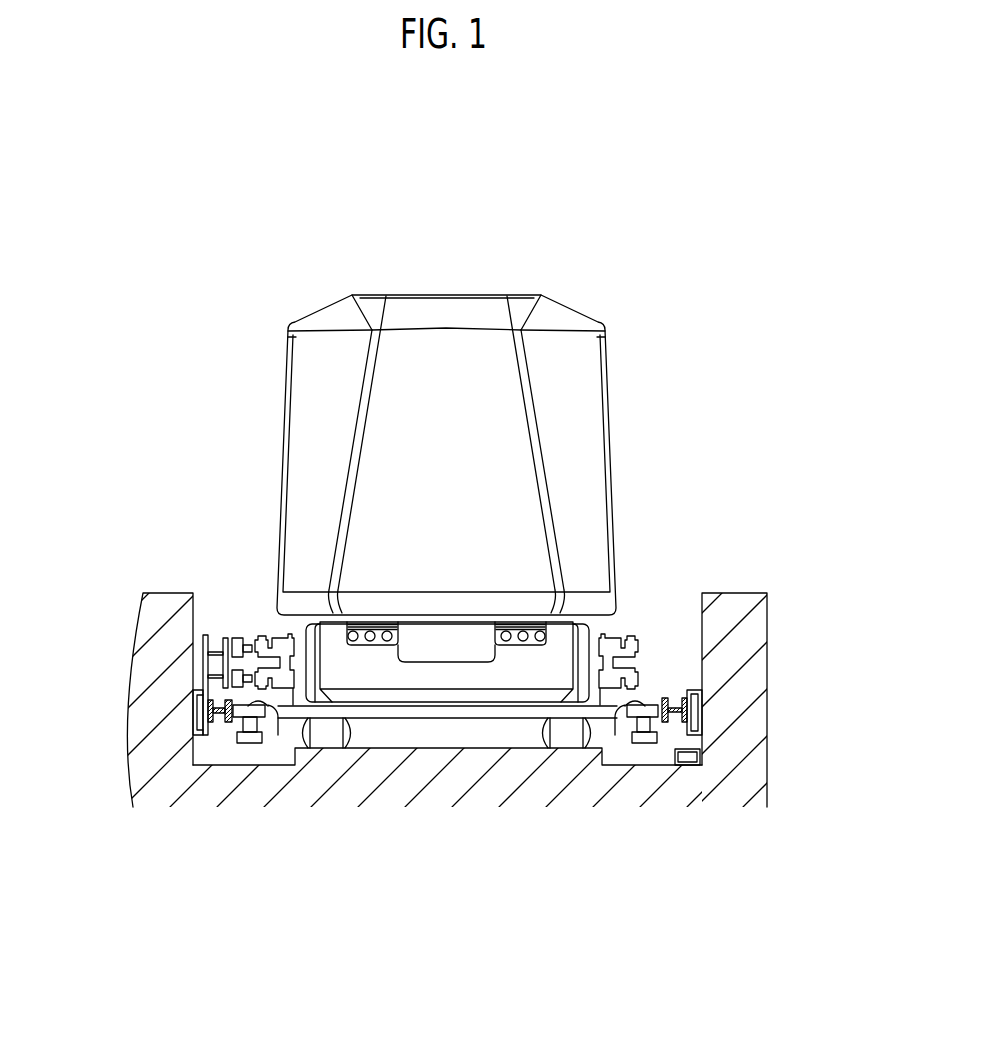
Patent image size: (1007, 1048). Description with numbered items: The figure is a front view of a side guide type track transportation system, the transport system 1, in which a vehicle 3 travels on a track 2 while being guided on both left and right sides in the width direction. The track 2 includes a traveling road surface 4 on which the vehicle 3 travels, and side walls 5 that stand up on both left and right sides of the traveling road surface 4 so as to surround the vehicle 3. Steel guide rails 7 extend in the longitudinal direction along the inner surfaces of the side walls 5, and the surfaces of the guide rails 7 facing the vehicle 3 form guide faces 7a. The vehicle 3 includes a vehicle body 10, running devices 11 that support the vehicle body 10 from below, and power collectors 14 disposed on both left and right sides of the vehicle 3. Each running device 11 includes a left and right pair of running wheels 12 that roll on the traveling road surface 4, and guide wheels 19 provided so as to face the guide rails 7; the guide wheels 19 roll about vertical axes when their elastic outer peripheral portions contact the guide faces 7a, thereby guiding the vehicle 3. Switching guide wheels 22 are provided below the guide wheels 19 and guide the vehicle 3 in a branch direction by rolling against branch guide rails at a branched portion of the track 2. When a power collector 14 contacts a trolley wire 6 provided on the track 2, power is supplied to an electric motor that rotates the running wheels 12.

The transport system 1 is at (722, 205).
The track 2 is at (140, 568).
The vehicle 3 is at (250, 298).
The traveling road surface 4 is at (515, 744).
The side walls 5 is at (158, 640).
The trolley wire 6 is at (233, 637).
The guide rails 7 is at (212, 708).
The guide faces 7a is at (236, 701).
The vehicle body 10 is at (615, 398).
The running devices 11 is at (408, 725).
The running wheels 12 is at (325, 733).
The power collectors 14 is at (260, 635).
The guide wheels 19 is at (278, 735).
The switching guide wheels 22 is at (250, 743).